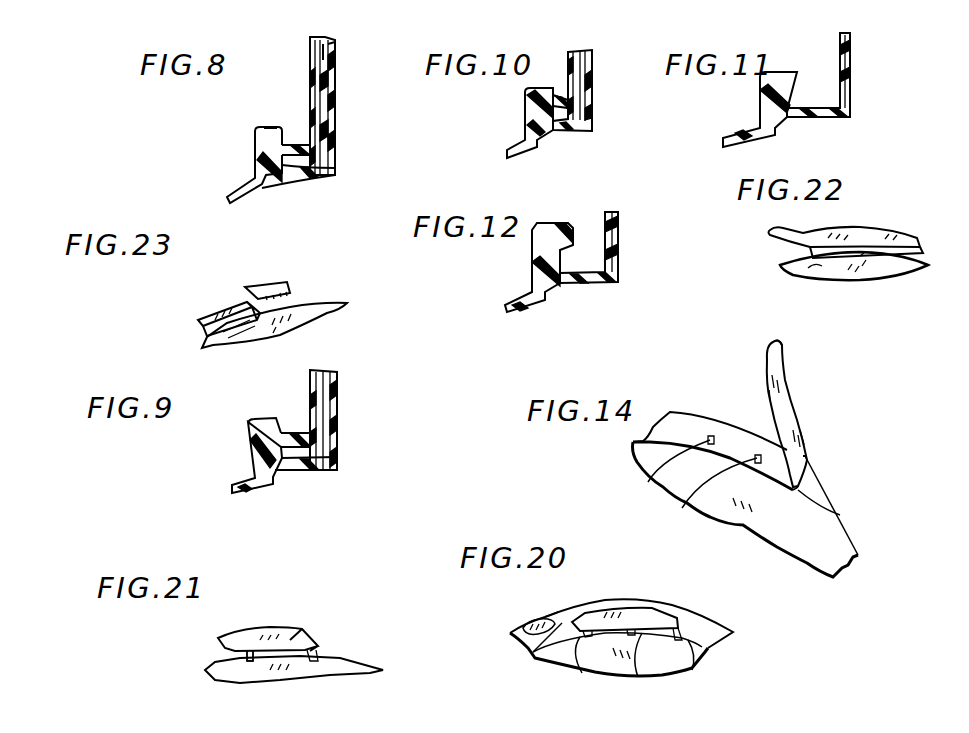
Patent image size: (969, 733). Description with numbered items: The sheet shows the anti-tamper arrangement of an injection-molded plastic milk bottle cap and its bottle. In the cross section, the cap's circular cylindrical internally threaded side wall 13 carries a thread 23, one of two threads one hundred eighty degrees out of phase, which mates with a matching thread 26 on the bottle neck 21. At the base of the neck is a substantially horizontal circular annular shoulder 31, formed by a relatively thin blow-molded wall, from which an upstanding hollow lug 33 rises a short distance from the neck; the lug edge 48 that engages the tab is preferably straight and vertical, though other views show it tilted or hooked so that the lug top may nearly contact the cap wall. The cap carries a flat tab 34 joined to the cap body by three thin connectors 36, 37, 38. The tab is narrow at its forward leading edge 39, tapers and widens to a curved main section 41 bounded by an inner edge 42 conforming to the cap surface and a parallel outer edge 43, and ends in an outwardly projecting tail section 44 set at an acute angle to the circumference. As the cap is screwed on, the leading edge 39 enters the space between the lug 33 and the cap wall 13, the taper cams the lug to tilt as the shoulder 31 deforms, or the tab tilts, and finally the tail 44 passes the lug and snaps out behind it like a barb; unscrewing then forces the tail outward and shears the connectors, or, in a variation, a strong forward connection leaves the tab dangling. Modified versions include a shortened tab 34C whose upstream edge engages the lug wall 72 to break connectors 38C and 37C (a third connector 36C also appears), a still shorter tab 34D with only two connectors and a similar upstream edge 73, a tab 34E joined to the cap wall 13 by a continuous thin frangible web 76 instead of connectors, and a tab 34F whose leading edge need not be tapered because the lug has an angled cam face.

In FIG. 8, the side wall 13 is at (311, 68).
In FIG. 23, the side wall 13 is at (332, 307).
In FIG. 22, the side wall 13 is at (803, 265).
In FIG. 9, the side wall 13 is at (323, 420).
In FIG. 14, the side wall 13 is at (763, 507).
In FIG. 20, the side wall 13 is at (708, 642).
In FIG. 21, the side wall 13 is at (215, 668).
In FIG. 10, the neck 21 is at (572, 90).
In FIG. 11, the neck 21 is at (858, 66).
In FIG. 12, the neck 21 is at (627, 236).
In FIG. 8, the thread 23 is at (336, 73).
In FIG. 8, the thread 26 is at (336, 43).
In FIG. 8, the shoulder 31 is at (305, 166).
In FIG. 9, the shoulder 31 is at (337, 466).
In FIG. 14, the shoulder 31 is at (847, 545).
In FIG. 8, the lug 33 is at (255, 148).
In FIG. 10, the lug 33 is at (528, 95).
In FIG. 11, the lug 33 is at (776, 65).
In FIG. 12, the lug 33 is at (546, 218).
In FIG. 23, the lug 33 is at (277, 280).
In FIG. 9, the lug 33 is at (255, 432).
In FIG. 20, the lug 33 is at (525, 630).
In FIG. 8, the tab 34 is at (305, 146).
In FIG. 10, the tab 34 is at (555, 100).
In FIG. 9, the tab 34 is at (300, 433).
In FIG. 20, the tab 34C is at (638, 613).
In FIG. 21, the tab 34D is at (300, 632).
In FIG. 22, the tab 34E is at (867, 228).
In FIG. 23, the tab block 34F is at (222, 308).
In FIG. 14, the connector 36 is at (833, 508).
In FIG. 20, the recess wall 36C is at (695, 660).
In FIG. 14, the connector 37 is at (682, 508).
In FIG. 20, the connector 37C is at (638, 667).
In FIG. 14, the connector 38 is at (648, 482).
In FIG. 20, the connector 38C is at (575, 660).
In FIG. 14, the forward leading edge 39 is at (798, 490).
In FIG. 14, the curved main section 41 is at (795, 420).
In FIG. 14, the inner edge 42 is at (769, 400).
In FIG. 14, the outer edge 43 is at (803, 438).
In FIG. 14, the tail section 44 is at (775, 352).
In FIG. 8, the lug edge 48 is at (283, 117).
In FIG. 20, the wall of lug 72 is at (553, 618).
In FIG. 20, the upstream edge 73 is at (533, 652).
In FIG. 21, the upstream edge 73 is at (218, 644).
In FIG. 22, the frangible web 76 is at (867, 247).